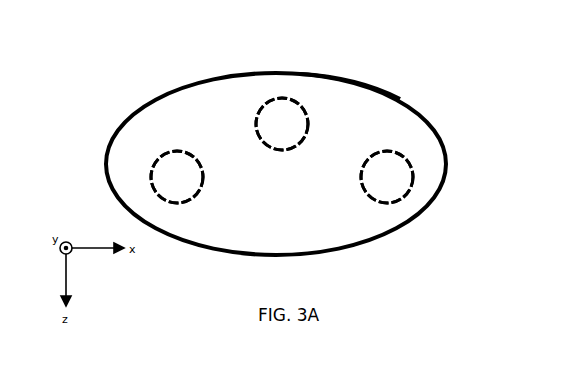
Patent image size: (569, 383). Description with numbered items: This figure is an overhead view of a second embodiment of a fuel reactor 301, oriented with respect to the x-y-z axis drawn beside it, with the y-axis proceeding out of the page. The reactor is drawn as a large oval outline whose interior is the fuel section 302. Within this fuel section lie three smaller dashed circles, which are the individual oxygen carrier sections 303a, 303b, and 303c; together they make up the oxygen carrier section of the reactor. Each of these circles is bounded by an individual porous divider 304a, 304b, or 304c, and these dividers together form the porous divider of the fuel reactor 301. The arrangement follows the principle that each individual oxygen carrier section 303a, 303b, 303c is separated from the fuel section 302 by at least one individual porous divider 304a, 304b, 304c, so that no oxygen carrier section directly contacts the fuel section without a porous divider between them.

The fuel reactor 301 is at (447, 167).
The fuel section 302 is at (373, 113).
The individual oxygen carrier section 303a is at (172, 173).
The individual porous divider 304a is at (165, 151).
The individual oxygen carrier section 303b is at (280, 120).
The individual porous divider 304b is at (302, 105).
The individual oxygen carrier section 303c is at (383, 182).
The individual porous divider 304c is at (413, 182).